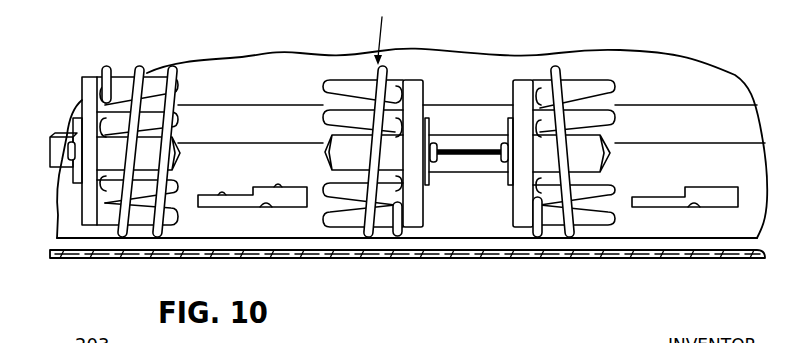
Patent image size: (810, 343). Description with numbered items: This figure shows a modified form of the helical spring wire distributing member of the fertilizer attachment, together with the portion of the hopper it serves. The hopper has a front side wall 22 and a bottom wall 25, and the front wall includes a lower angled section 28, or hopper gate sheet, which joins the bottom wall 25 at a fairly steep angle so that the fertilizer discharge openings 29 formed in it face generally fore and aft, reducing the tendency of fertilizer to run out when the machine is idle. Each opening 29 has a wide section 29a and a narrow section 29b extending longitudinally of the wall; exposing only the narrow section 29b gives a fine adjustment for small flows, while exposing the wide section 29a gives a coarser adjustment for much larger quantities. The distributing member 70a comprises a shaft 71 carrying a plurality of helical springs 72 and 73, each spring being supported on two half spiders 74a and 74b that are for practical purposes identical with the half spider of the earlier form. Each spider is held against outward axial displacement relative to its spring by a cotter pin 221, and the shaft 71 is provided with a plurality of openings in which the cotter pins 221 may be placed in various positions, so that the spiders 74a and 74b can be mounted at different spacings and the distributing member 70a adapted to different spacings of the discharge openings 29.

The front side wall 22 is at (652, 72).
The bottom wall 25 is at (492, 262).
The lower angled section 28 is at (243, 127).
The fertilizer discharge openings 29 is at (266, 207).
The wide section 29a is at (282, 186).
The narrow section 29b is at (220, 194).
The distributing member 70a is at (384, 32).
The shaft 71 is at (57, 164).
The spring 72 is at (557, 69).
The spring 73 is at (141, 73).
The half spider 74a is at (89, 88).
The half spider 74b is at (415, 87).
The cotter pin 221 is at (71, 118).